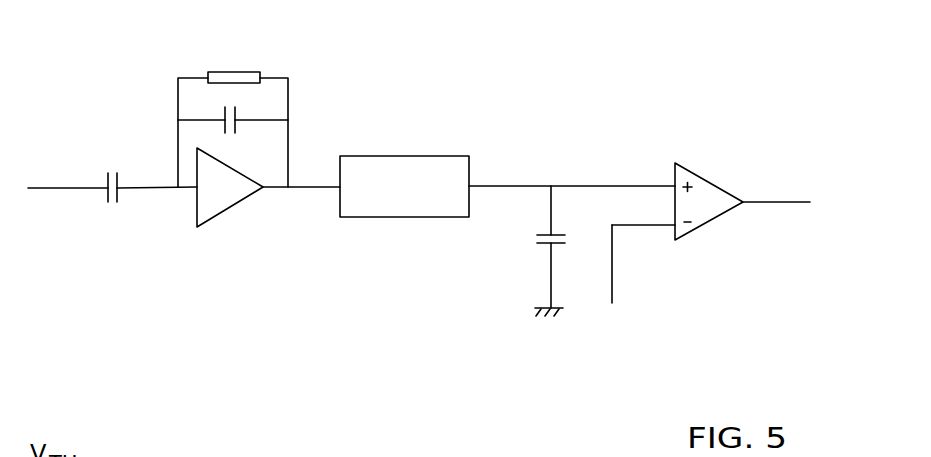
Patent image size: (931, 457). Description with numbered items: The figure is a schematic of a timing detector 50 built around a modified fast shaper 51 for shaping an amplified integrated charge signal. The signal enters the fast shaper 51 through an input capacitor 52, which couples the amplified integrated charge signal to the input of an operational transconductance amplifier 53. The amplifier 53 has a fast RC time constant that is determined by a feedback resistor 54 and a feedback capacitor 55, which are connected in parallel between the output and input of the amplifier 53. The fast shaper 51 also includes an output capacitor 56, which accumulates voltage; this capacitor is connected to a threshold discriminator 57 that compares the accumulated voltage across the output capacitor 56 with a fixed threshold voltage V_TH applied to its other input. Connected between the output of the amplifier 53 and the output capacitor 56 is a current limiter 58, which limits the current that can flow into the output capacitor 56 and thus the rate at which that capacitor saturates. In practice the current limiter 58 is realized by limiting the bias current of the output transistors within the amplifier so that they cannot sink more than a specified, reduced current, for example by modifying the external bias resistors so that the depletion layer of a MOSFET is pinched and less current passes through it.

The timing detector 50 is at (452, 356).
The fast shaper 51 is at (174, 257).
The input capacitor 52 is at (107, 174).
The operational transconductance amplifier 53 is at (232, 207).
The feedback resistor 54 is at (235, 70).
The feedback capacitor 55 is at (235, 110).
The output capacitor 56 is at (545, 247).
The threshold discriminator 57 is at (710, 182).
The current limiter 58 is at (405, 155).